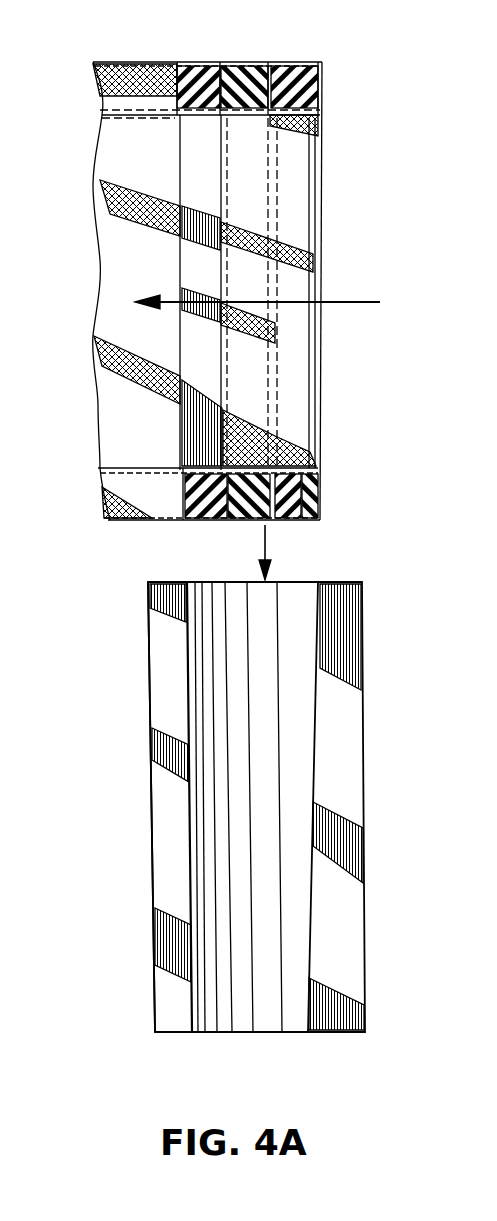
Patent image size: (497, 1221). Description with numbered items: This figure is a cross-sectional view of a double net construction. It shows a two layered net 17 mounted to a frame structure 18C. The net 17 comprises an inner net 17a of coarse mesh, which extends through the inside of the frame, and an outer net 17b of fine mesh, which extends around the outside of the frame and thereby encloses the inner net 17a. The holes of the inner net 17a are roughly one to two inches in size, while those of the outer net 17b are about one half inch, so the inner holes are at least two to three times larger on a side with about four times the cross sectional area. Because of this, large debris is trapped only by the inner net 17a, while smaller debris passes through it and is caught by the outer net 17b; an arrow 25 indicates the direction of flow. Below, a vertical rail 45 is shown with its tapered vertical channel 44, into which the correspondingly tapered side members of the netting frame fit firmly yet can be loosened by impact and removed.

The net 17 is at (78, 216).
The inner net 17a is at (148, 118).
The outer net 17b is at (112, 62).
The frame structure 18C is at (330, 222).
The direction arrow 25 is at (340, 302).
The vertical channels 44 is at (320, 600).
The vertical rails 45 is at (148, 700).